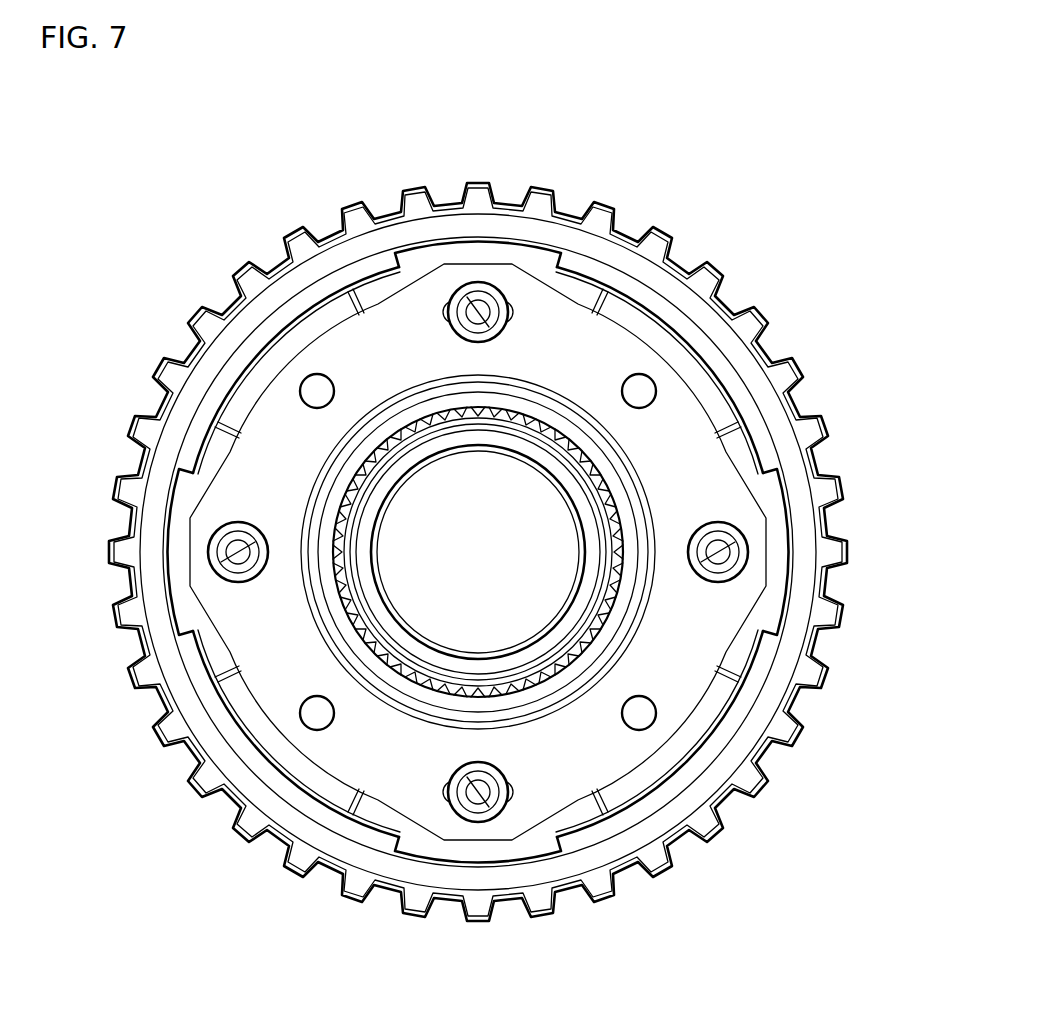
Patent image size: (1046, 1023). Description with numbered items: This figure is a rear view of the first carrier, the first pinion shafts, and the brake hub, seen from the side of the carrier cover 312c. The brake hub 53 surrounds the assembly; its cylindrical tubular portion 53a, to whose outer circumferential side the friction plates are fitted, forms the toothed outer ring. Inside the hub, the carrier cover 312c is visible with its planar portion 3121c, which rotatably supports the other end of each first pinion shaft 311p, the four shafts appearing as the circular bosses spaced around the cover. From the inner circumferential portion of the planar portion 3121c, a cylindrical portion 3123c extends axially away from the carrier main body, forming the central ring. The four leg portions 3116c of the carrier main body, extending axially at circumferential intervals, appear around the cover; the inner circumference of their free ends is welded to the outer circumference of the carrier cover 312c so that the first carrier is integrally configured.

The brake hub 53 is at (507, 174).
The tubular portion 53a is at (567, 213).
The leg portions 3116c is at (305, 343).
The carrier cover 312c is at (390, 355).
The planar portion 3121c is at (267, 465).
The cylindrical portion 3123c is at (473, 398).
The first pinion shaft 311p is at (478, 790).